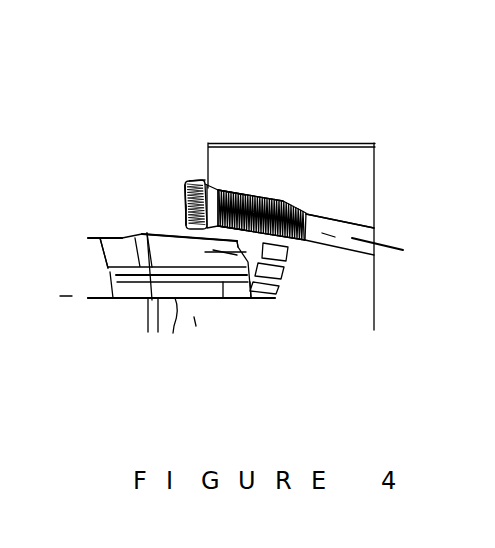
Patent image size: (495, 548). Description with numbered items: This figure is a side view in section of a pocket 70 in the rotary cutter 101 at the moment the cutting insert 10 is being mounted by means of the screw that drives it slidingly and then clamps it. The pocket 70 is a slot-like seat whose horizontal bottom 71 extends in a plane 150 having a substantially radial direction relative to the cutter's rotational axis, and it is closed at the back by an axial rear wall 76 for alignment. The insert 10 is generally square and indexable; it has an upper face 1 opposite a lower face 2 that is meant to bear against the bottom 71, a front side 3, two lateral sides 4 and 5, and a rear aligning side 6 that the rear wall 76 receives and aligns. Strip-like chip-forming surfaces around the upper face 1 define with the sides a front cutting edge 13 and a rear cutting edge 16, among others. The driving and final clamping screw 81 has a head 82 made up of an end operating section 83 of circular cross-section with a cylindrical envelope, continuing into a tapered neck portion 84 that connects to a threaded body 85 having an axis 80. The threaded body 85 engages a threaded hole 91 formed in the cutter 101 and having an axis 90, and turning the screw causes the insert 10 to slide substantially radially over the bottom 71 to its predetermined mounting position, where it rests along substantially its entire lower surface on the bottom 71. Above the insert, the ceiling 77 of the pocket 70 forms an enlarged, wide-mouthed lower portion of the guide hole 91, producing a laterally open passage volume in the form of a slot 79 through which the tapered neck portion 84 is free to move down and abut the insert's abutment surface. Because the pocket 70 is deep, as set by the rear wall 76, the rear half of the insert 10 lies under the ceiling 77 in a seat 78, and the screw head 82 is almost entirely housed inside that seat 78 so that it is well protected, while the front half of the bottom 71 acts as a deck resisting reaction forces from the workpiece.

The upper face 1 is at (121, 238).
The lower face 2 is at (163, 331).
The front side 3 is at (99, 251).
The lateral side 4 is at (198, 332).
The lateral side 5 is at (190, 251).
The rear aligning side 6 is at (257, 300).
The cutting insert 10 is at (135, 298).
The front cutting edge 13 is at (92, 238).
The rear cutting edge 16 is at (280, 282).
The pocket 70 is at (135, 154).
The bottom 71 is at (243, 299).
The rear wall 76 is at (280, 278).
The ceiling 77 is at (265, 197).
The seat 78 is at (174, 167).
The slot 79 is at (277, 197).
The axis 80 is at (185, 207).
The driving and final clamping screw 81 is at (158, 172).
The head 82 is at (203, 181).
The end operating section 83 is at (217, 192).
The tapered neck portion 84 is at (222, 192).
The threaded body 85 is at (312, 210).
The axis 90 is at (390, 242).
The threaded hole 91 is at (352, 225).
The rotary cutter 101 is at (360, 165).
The plane 150 is at (95, 299).